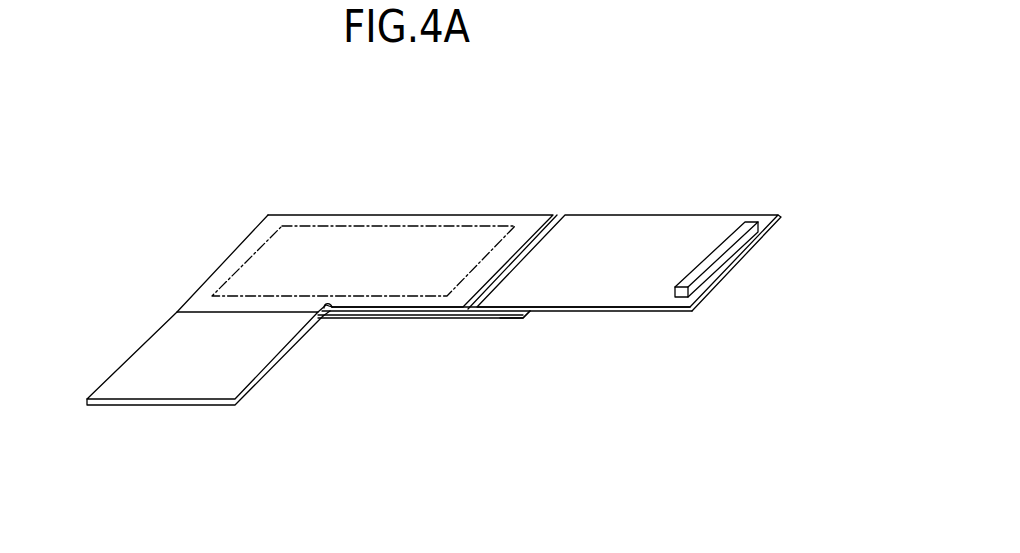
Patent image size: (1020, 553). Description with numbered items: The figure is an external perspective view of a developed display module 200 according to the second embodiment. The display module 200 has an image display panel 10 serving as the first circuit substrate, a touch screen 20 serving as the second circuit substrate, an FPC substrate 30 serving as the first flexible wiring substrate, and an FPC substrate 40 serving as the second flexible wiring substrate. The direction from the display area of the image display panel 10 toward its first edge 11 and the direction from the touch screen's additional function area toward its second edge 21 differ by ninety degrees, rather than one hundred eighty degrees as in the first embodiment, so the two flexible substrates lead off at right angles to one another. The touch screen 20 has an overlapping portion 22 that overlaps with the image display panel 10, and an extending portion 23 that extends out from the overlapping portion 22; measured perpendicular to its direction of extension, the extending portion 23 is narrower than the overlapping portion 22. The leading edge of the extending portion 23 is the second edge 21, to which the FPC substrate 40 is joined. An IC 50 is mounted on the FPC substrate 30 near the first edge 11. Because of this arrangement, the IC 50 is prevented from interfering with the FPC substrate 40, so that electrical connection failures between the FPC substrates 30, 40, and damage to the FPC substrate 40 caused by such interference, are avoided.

The image display panel 10 is at (421, 320).
The first edge 11 is at (504, 319).
The touch screen 20 is at (394, 213).
The second edge 21 is at (326, 323).
The overlapping portion 22 is at (241, 252).
The extending portion 23 is at (327, 309).
The FPC substrate 30 is at (631, 231).
The FPC substrate 40 is at (135, 358).
The IC 50 is at (745, 221).
The display module 200 is at (701, 136).